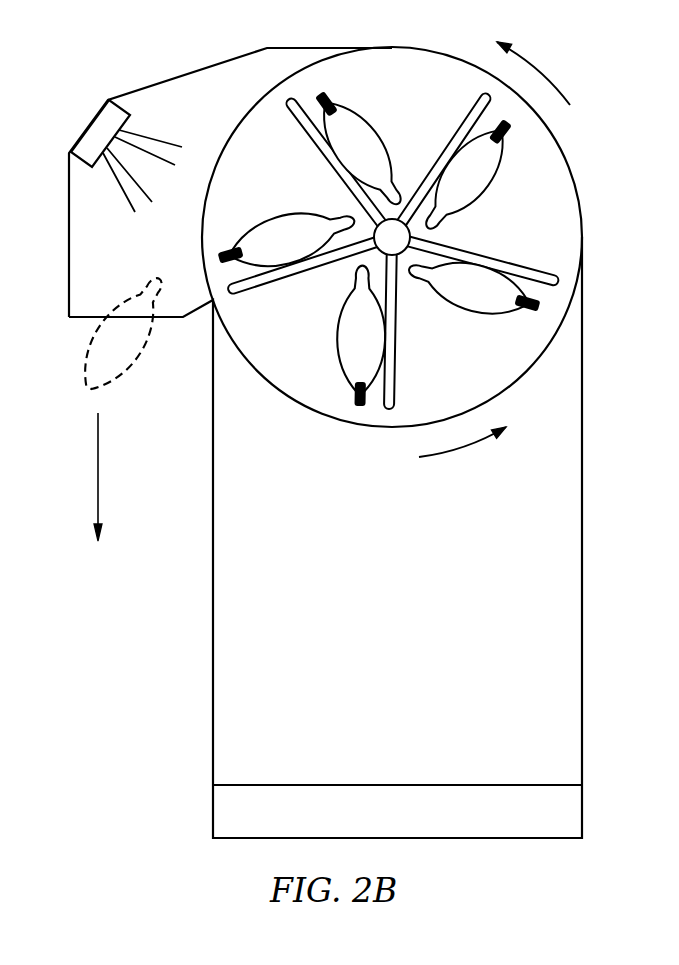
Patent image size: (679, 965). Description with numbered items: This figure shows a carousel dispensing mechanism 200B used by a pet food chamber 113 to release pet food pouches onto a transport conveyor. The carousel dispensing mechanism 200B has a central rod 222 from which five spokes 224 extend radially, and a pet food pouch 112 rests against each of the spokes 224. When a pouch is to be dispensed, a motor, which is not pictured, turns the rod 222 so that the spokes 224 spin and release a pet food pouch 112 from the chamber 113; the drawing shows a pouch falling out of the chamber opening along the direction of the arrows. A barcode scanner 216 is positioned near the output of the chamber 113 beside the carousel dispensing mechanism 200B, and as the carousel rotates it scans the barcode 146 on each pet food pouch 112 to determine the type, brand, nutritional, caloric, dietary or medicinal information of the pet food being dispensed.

The carousel dispensing mechanism 200B is at (492, 867).
The pet food chamber 113 is at (583, 183).
The barcode scanner 216 is at (97, 137).
The spokes 224 is at (468, 120).
The rod 222 is at (375, 232).
The pet food pouch 112 is at (351, 106).
The barcode 146 is at (323, 90).